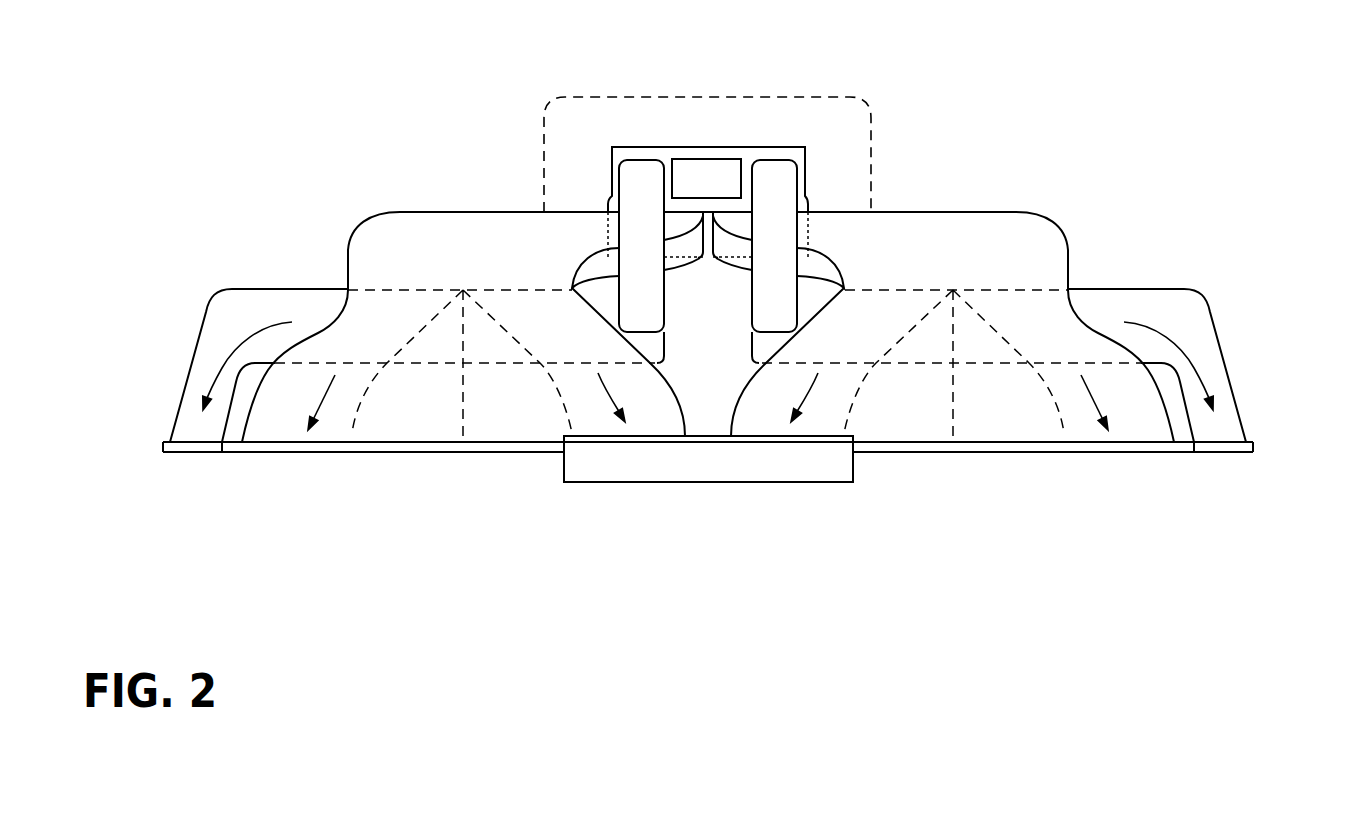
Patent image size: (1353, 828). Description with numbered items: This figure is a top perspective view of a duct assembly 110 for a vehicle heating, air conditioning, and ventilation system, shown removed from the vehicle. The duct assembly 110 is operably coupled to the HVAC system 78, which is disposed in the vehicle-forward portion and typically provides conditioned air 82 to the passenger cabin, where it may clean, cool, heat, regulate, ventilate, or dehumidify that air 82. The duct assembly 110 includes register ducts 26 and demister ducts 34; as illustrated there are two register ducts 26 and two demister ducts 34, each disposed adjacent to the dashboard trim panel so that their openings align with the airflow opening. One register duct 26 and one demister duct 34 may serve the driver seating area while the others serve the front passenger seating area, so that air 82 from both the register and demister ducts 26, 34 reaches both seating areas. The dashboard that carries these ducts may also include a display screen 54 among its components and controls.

The duct assembly 110 is at (990, 188).
The heating, air conditioning, and ventilation (HVAC) system 78 is at (806, 88).
The conditioned air 82 is at (1192, 348).
The demister duct 34 is at (200, 427).
The register duct 26 is at (337, 420).
The display screen 54 is at (683, 465).